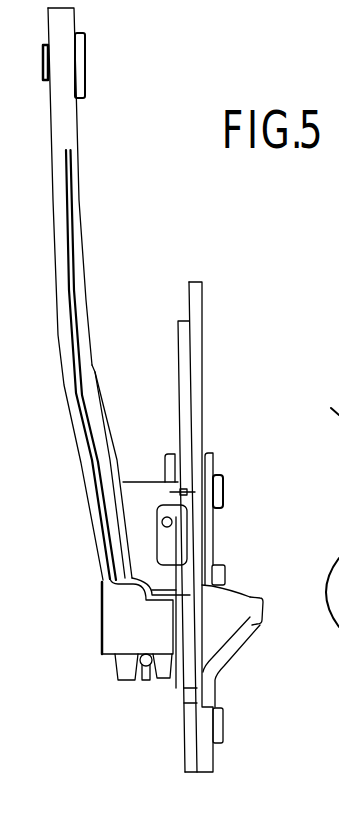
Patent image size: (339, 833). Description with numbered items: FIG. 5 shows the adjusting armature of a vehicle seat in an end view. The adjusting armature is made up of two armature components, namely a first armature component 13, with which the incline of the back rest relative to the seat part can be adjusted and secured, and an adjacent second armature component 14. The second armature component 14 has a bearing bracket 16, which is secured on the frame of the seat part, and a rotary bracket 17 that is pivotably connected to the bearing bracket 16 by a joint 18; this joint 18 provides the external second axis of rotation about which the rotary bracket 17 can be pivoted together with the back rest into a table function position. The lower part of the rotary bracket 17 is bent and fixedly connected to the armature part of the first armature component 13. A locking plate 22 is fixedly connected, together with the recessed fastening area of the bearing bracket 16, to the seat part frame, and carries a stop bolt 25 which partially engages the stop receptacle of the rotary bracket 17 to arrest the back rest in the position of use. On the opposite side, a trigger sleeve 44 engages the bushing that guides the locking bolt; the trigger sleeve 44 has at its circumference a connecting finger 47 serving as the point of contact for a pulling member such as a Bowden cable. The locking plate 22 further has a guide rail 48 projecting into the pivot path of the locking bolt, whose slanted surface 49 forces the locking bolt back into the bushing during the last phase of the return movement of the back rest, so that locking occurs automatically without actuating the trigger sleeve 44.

The first armature component 13 is at (206, 318).
The second armature component 14 is at (83, 193).
The bearing bracket 16 is at (88, 484).
The rotary bracket 17 is at (76, 272).
The joint 18 is at (87, 66).
The locking plate 22 is at (205, 758).
The stop bolt 25 is at (224, 492).
The trigger sleeve 44 is at (125, 630).
The connecting finger 47 is at (128, 668).
The guide rail 48 is at (260, 627).
The slanted surface 49 is at (234, 612).